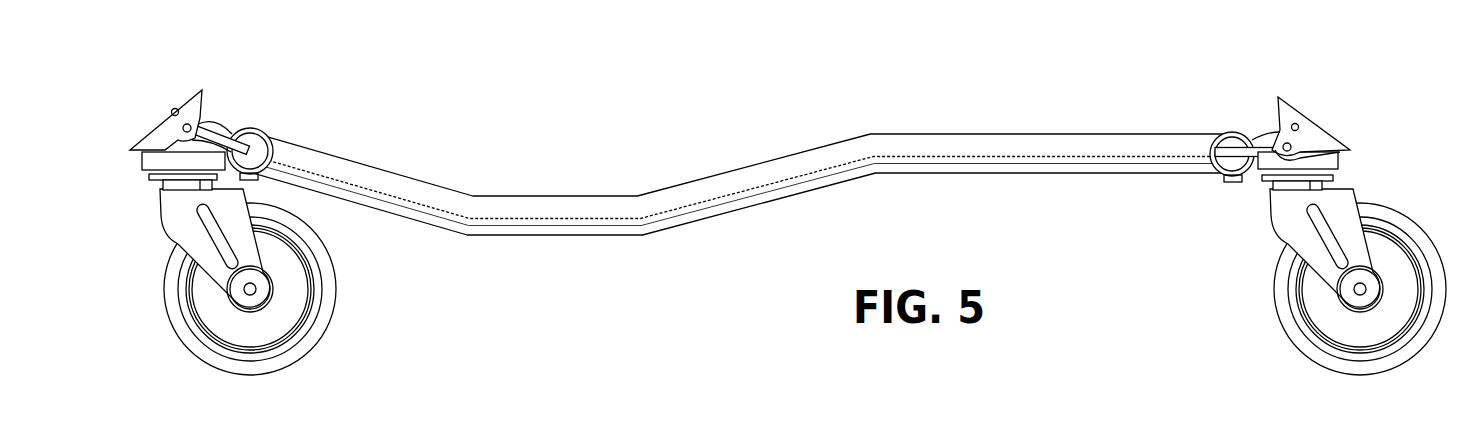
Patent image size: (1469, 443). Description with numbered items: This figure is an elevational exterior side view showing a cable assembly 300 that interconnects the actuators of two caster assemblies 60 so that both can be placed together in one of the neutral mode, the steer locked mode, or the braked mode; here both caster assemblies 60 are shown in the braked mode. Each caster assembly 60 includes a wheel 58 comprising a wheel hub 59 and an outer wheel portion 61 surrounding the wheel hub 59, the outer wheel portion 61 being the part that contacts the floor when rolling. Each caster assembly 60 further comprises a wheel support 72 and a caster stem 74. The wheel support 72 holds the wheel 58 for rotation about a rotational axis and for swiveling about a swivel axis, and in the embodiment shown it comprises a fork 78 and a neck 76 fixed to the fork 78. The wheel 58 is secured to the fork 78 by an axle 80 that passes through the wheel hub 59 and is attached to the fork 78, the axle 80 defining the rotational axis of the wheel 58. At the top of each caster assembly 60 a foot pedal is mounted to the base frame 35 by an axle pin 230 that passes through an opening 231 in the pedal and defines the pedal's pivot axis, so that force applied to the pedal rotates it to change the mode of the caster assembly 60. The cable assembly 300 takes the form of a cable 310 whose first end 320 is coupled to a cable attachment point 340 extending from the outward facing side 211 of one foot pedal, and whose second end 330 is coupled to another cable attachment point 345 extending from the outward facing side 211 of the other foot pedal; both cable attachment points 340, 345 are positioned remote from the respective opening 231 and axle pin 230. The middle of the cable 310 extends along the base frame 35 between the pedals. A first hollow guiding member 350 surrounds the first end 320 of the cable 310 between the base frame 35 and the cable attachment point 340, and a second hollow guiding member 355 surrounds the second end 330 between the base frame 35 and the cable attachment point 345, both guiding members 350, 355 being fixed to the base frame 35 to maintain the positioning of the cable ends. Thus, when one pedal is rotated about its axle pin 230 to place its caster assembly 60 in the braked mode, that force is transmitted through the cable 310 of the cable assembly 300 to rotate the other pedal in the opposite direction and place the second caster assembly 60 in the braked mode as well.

The base frame 35 is at (893, 143).
The wheel 58 is at (249, 369).
The wheel hub 59 is at (292, 317).
The caster assembly 60 is at (776, 240).
The outer wheel portion 61 is at (173, 308).
The wheel support 72 is at (786, 300).
The caster stem 74 is at (168, 184).
The neck 76 is at (173, 218).
The fork 78 is at (255, 268).
The axle 80 is at (248, 296).
The outward facing side 211 is at (203, 90).
The axle pin 230 is at (172, 110).
The opening 231 is at (168, 145).
The cable assembly 300 is at (738, 191).
The cable 310 is at (517, 220).
The first end 320 is at (201, 130).
The second end 330 is at (1272, 138).
The cable attachment point 340 is at (178, 112).
The cable attachment point 345 is at (1300, 146).
The first hollow guiding member 350 is at (246, 121).
The second hollow guiding member 355 is at (1227, 137).